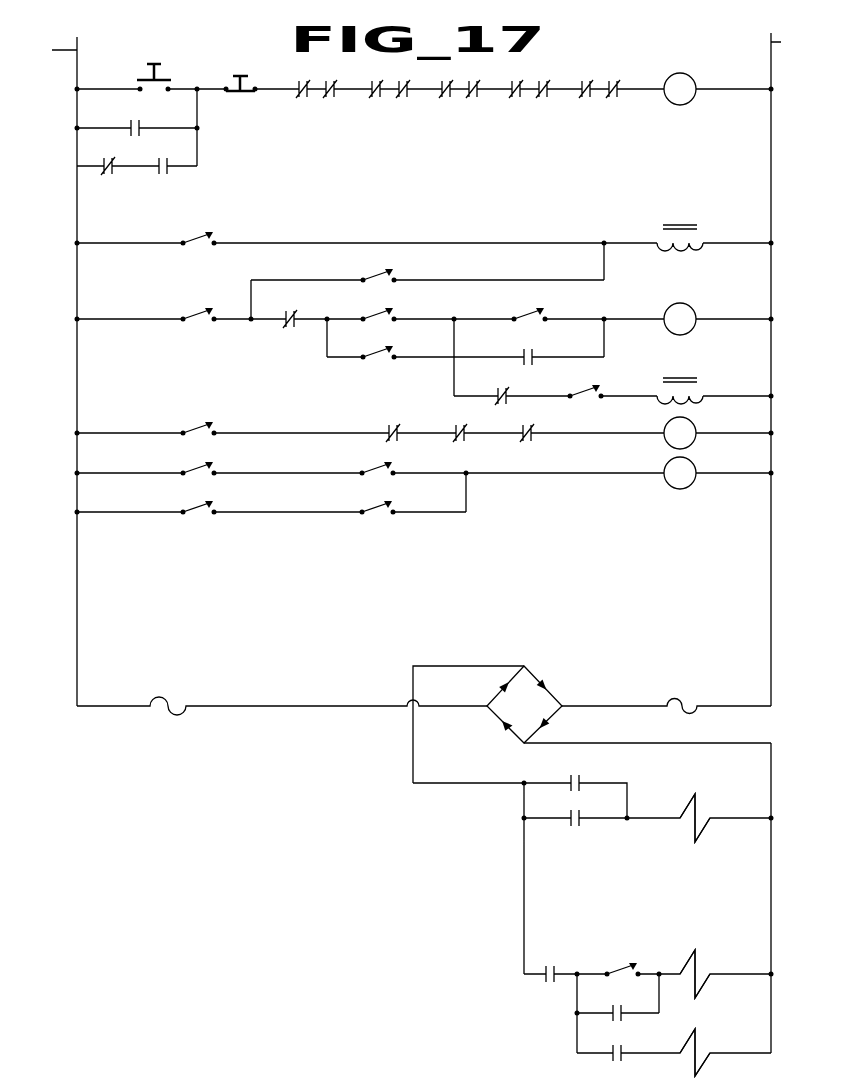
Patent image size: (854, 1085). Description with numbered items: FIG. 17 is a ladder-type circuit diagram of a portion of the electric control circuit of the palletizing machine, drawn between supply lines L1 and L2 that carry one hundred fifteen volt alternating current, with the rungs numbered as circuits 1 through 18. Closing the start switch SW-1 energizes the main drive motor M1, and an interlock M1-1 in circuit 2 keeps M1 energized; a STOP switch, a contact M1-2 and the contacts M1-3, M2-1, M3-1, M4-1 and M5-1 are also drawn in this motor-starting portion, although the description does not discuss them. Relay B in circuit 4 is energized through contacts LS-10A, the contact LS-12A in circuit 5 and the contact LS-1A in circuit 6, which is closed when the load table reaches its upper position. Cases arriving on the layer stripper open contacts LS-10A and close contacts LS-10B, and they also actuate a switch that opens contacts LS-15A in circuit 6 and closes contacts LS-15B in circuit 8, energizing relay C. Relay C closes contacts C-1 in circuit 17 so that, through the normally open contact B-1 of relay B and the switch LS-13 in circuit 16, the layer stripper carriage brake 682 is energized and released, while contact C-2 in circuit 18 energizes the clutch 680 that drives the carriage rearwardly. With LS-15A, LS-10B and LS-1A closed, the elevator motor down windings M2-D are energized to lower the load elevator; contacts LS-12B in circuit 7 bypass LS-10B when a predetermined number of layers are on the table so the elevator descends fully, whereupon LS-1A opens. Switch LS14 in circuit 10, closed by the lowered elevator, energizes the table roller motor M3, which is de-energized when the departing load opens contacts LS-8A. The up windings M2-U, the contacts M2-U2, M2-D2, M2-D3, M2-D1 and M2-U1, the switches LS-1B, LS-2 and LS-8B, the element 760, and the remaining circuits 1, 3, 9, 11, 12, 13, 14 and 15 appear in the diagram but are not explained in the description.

The supply line L1 is at (52, 371).
The supply line L2 is at (786, 543).
The circuit rung 1 is at (436, 123).
The circuit 2 is at (436, 128).
The circuit rung 3 is at (437, 166).
The circuit 4 is at (436, 243).
The circuit 5 is at (524, 281).
The circuit 6 is at (436, 319).
The circuit 7 is at (562, 342).
The circuit 8 is at (625, 362).
The circuit rung 9 is at (436, 433).
The circuit 10 is at (441, 473).
The circuit rung 11 is at (441, 497).
The circuit rung 12 with rectifier bridge 12 is at (442, 724).
The circuit rung 13 is at (665, 743).
The circuit rung 14 is at (610, 796).
The circuit rung 15 is at (664, 878).
The circuit 16 is at (665, 974).
The circuit 17 is at (691, 1013).
The circuit 18 is at (692, 1052).
The start switch SW-1 is at (172, 50).
The stop pushbutton switch STOP is at (240, 73).
The interlock M1-1 is at (158, 114).
The contacts of relay M1 M1-2 is at (153, 174).
The overload contacts of motor starter M1 M1-3 is at (316, 78).
The overload contacts of motor starter M2 M2-1 is at (389, 78).
The normally closed contacts of relay M3 M3-1 is at (548, 456).
The overload contacts of motor starter M4 M4-1 is at (529, 78).
The overload contacts of motor starter M5 M5-1 is at (599, 78).
The main drive motor M1 is at (683, 75).
The contacts LS-10A is at (204, 238).
The relay B is at (656, 234).
The contact LS-12A is at (384, 277).
The contact LS-1A is at (192, 315).
The normally closed contact of relay M2-U M2-U2 is at (296, 328).
The contacts LS-10B is at (390, 313).
The contacts LS-15A is at (540, 313).
The motor windings M2-D is at (685, 305).
The contacts LS-12B is at (388, 358).
The contact of relay M2-D M2-D2 is at (544, 340).
The normally closed contact of relay M2-D M2-D3 is at (524, 381).
The relay C is at (704, 388).
The contacts LS-15B is at (598, 389).
The limit switch contact LS-1B is at (197, 427).
The motor windings M2-U is at (687, 423).
The drive motor M3 is at (690, 463).
The switch LS14 is at (192, 468).
The contacts LS-8A is at (376, 465).
The limit switch LS-2 is at (192, 507).
The limit switch contact LS-8B is at (376, 502).
The contact of relay M2-D M2-D1 is at (594, 776).
The contact of relay M2-U M2-U1 is at (594, 812).
The conductor 760 is at (695, 806).
The switch LS-13 is at (630, 962).
The layer stripper carriage brake 682 is at (696, 958).
The normally open contact B-1 is at (554, 981).
The contacts C-1 is at (632, 992).
The contact C-2 is at (635, 1032).
The clutch 680 is at (696, 1038).